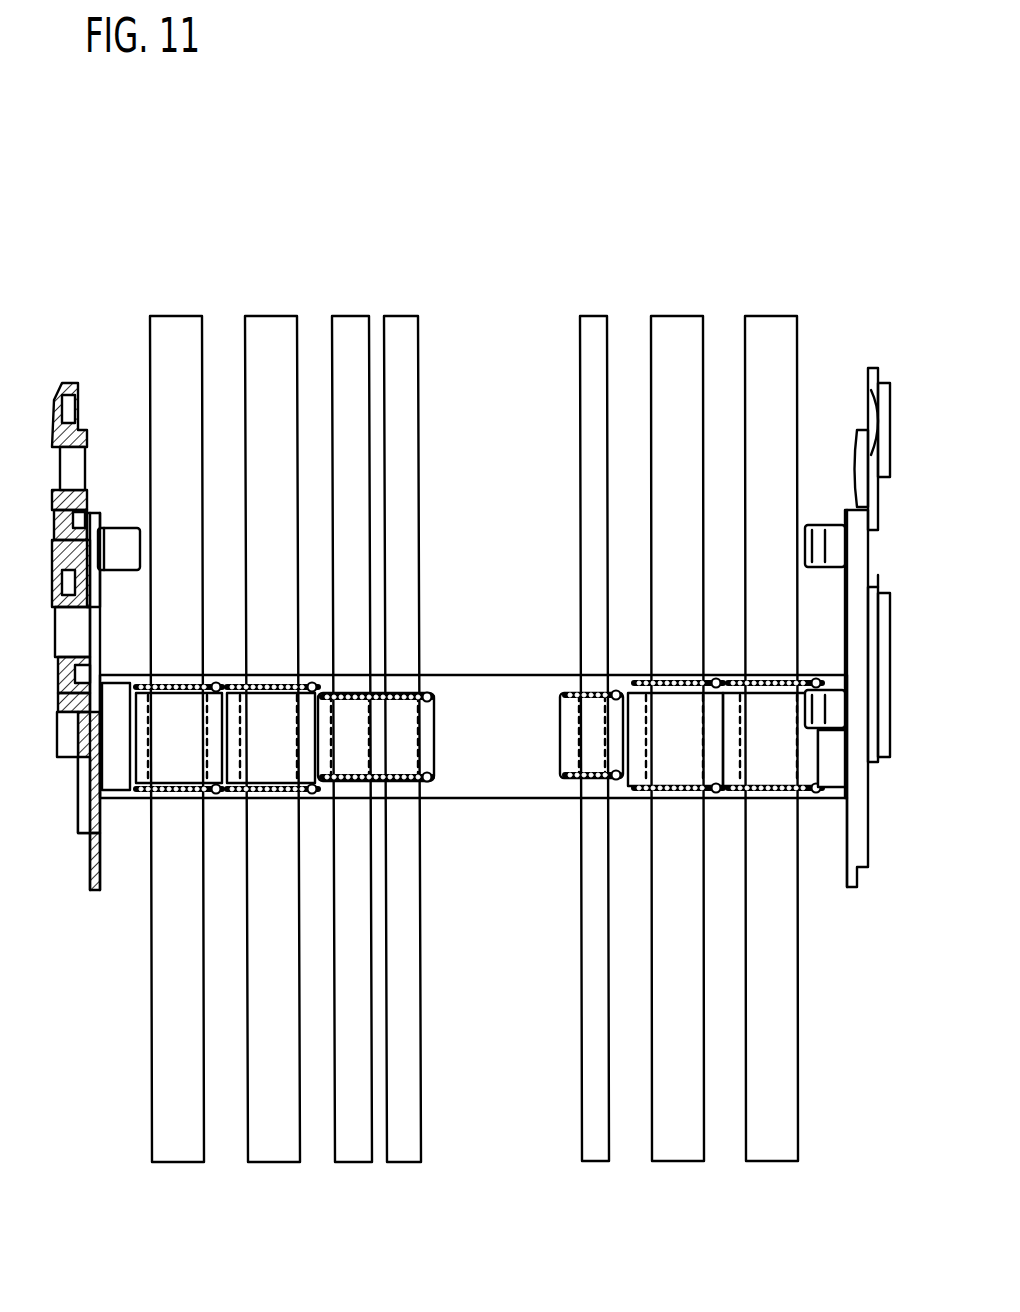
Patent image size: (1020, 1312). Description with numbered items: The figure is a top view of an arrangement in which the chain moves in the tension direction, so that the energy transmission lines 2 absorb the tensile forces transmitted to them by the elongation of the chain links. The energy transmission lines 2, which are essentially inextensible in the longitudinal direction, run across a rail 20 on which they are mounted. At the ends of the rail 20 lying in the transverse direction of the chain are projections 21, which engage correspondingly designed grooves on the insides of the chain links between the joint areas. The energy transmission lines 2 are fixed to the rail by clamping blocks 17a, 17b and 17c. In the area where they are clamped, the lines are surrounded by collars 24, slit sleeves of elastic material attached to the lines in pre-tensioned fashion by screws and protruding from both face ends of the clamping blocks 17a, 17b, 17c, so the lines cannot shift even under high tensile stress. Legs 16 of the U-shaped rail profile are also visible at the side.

The energy transmission line 2 is at (779, 346).
The leg 16 is at (113, 725).
The clamping block 17a is at (477, 739).
The clamping block 17b is at (376, 737).
The clamping block 17c is at (591, 735).
The rail 20 is at (496, 820).
The projection 21 is at (90, 760).
The collar 24 is at (593, 690).